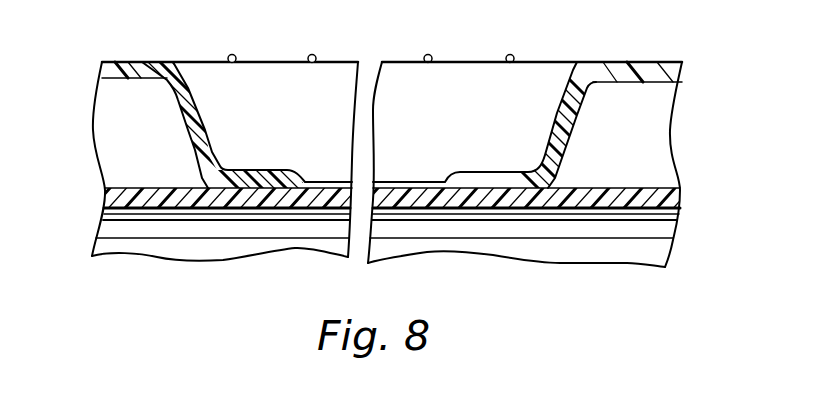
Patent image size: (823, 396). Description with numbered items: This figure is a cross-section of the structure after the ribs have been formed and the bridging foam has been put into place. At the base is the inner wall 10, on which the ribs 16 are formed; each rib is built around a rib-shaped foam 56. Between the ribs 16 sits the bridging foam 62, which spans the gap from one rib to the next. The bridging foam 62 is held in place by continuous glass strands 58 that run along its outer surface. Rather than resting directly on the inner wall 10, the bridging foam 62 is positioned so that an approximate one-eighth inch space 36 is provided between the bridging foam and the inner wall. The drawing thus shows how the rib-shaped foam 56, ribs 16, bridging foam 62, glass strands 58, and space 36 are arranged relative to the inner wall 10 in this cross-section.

The inner wall 10 is at (278, 197).
The ribs 16 is at (155, 62).
The space 36 is at (425, 182).
The rib-shaped foam 56 is at (130, 100).
The continuous glass strands 58 is at (236, 56).
The bridging foam 62 is at (515, 85).